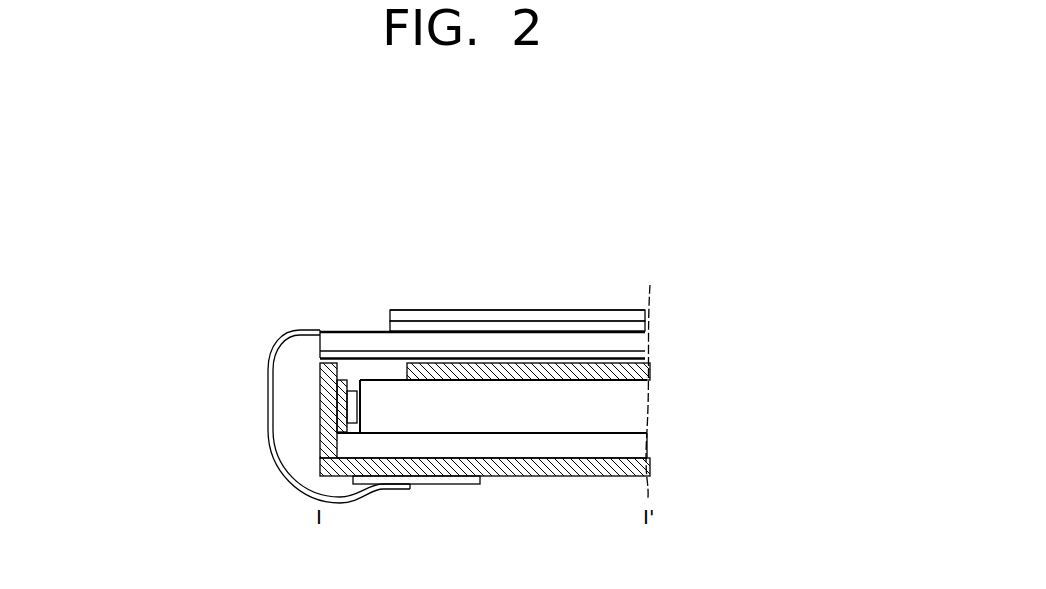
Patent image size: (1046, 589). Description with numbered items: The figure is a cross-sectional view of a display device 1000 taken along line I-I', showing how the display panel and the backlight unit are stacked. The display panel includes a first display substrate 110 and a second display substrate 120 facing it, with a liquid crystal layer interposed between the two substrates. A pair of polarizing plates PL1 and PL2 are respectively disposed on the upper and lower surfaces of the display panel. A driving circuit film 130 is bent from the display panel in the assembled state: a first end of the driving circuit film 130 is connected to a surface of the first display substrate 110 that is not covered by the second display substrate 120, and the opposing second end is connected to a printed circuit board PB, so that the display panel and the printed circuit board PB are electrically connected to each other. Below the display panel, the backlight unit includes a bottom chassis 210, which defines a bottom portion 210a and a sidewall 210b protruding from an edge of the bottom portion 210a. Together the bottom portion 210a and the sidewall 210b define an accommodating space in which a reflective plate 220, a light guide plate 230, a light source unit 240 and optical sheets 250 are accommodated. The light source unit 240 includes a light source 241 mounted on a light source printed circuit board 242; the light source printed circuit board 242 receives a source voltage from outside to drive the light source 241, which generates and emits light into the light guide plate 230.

The display device 1000 is at (608, 195).
The second display substrate 120 is at (647, 320).
The first display substrate 110 is at (641, 344).
The driving circuit film 130 is at (278, 353).
The polarizing plate PL1 is at (526, 311).
The polarizing plate PL2 is at (650, 355).
The optical sheets 250 is at (645, 372).
The light guide plate 230 is at (640, 408).
The reflective plate 220 is at (640, 446).
The bottom chassis 210 is at (166, 392).
The bottom portion 210a is at (353, 467).
The sidewall 210b is at (324, 397).
The light source unit 240 is at (398, 233).
The light source 241 is at (351, 391).
The light source printed circuit board 242 is at (342, 380).
The printed circuit board PB is at (460, 484).